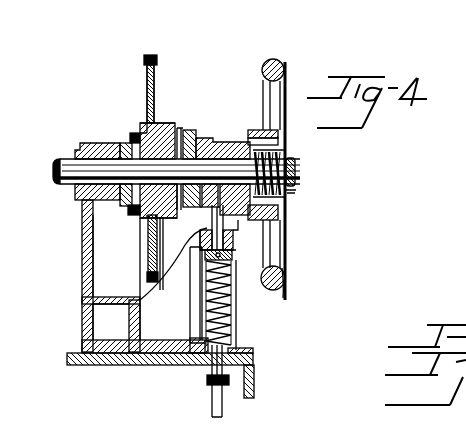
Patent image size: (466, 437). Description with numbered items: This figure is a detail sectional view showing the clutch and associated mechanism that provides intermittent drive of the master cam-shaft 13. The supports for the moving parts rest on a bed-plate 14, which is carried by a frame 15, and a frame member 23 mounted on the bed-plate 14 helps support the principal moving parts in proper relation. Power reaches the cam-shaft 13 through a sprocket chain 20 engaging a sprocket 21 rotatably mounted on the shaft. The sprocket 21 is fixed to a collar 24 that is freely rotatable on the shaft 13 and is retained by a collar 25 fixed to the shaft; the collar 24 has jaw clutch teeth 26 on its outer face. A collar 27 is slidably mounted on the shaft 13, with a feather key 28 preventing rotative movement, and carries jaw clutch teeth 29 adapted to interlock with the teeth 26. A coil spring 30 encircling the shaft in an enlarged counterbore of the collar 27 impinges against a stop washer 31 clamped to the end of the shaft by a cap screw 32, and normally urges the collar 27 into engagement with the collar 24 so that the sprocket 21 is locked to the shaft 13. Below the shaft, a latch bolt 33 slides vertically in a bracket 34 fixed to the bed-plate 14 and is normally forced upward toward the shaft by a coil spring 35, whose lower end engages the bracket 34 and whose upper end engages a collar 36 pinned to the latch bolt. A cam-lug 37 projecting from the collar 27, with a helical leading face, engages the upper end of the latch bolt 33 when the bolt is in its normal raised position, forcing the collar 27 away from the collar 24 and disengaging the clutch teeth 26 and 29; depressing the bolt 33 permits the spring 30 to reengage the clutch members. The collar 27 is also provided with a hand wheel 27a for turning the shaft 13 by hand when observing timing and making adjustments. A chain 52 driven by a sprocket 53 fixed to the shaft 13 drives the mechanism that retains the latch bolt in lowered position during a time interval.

The master cam-shaft 13 is at (58, 170).
The bed-plate 14 is at (254, 357).
The frame 15 is at (256, 387).
The sprocket chain 20 is at (152, 70).
The sprocket 21 is at (155, 95).
The frame member 23 is at (82, 247).
The collar 24 is at (168, 123).
The collar 25 is at (205, 138).
The jaw clutch teeth 26 is at (174, 128).
The collar 27 is at (256, 128).
The hand wheel 27a is at (286, 282).
The feather key 28 is at (210, 138).
The jaw clutch teeth 29 is at (149, 250).
The coil spring 30 is at (292, 162).
The stop washer 31 is at (295, 195).
The cap screw 32 is at (298, 172).
The latch bolt 33 is at (210, 370).
The bracket 34 is at (173, 336).
The coil spring 35 is at (231, 311).
The collar 36 is at (226, 258).
The cam-lug 37 is at (230, 226).
The chain 52 is at (133, 133).
The sprocket 53 is at (133, 215).